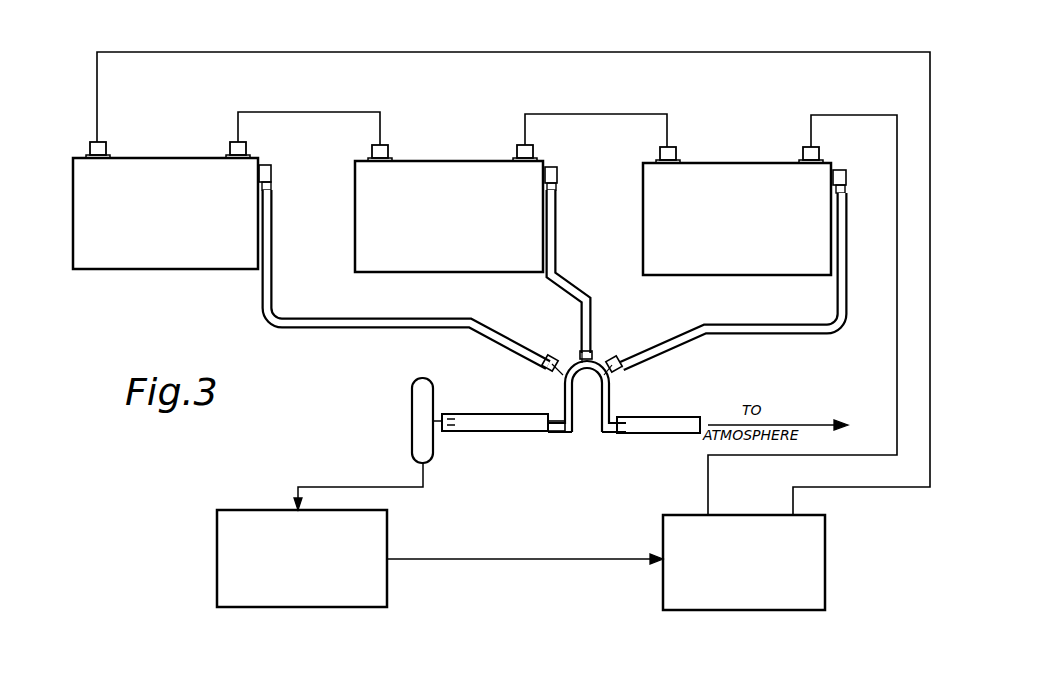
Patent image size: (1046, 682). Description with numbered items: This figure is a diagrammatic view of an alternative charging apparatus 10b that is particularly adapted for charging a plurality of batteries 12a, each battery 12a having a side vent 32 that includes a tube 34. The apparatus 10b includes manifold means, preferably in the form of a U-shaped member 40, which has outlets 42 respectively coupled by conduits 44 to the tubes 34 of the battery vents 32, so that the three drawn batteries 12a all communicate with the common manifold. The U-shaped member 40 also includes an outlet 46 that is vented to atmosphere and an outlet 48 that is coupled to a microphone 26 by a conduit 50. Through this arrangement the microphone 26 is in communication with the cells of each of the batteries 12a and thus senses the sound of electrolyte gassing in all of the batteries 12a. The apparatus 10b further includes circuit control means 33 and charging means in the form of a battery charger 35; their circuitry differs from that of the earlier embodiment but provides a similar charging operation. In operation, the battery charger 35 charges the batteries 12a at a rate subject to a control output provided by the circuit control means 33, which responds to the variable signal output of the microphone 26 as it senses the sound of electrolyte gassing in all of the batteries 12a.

The charging apparatus 10b is at (318, 367).
The battery 12a is at (157, 254).
The microphone 26 is at (420, 393).
The side vent 32 is at (267, 165).
The circuit control means 33 is at (300, 600).
The tube 34 is at (272, 185).
The battery charger 35 is at (746, 598).
The U-shaped member 40 is at (565, 388).
The outlet 42 is at (612, 360).
The conduit 44 is at (336, 322).
The outlet vented to atmosphere 46 is at (626, 420).
The outlet 48 is at (550, 432).
The conduit 50 is at (471, 417).